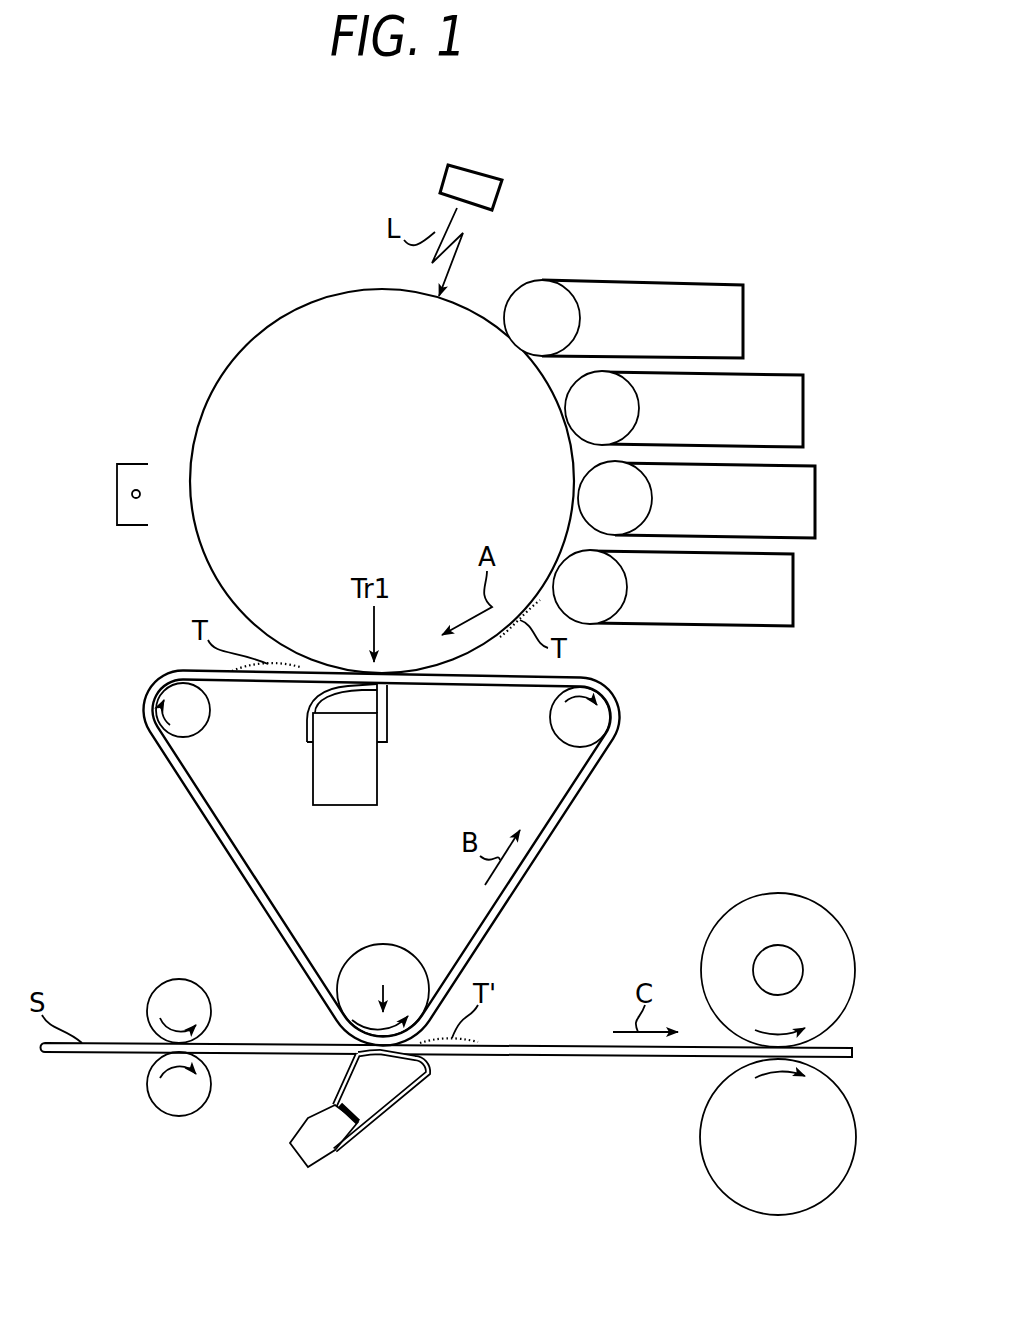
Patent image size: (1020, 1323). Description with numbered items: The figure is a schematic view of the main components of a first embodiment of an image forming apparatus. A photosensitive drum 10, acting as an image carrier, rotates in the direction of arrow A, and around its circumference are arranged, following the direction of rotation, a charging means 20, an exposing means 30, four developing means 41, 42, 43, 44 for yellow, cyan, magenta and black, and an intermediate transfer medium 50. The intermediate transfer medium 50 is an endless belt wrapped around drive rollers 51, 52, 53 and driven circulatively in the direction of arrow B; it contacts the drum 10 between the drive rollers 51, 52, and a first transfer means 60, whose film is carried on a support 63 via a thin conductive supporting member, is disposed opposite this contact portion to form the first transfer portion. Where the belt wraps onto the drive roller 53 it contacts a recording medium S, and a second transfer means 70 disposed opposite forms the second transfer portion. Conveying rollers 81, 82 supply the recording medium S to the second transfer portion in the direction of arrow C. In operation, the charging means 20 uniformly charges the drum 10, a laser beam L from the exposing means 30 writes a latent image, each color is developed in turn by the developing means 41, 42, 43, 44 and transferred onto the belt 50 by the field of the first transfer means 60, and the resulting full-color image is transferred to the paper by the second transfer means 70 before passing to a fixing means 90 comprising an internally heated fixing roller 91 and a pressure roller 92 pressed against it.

The photosensitive drum 10 is at (292, 338).
The charging means 20 is at (112, 470).
The exposing means 30 is at (443, 172).
The developing means (yellow) 41 is at (705, 280).
The developing means (cyan) 42 is at (762, 373).
The developing means (magenta) 43 is at (815, 510).
The developing means (black) 44 is at (793, 586).
The intermediate transfer medium 50 is at (527, 868).
The drive roller 51 is at (570, 730).
The drive roller 52 is at (198, 723).
The drive roller 53 is at (387, 946).
The first transfer means 60 is at (395, 740).
The support 63 is at (304, 1154).
The second transfer means 70 is at (383, 1128).
The conveying roller 81 is at (178, 985).
The conveying roller 82 is at (182, 1115).
The fixing means 90 is at (780, 1047).
The fixing roller 91 is at (760, 895).
The pressure roller 92 is at (712, 1180).